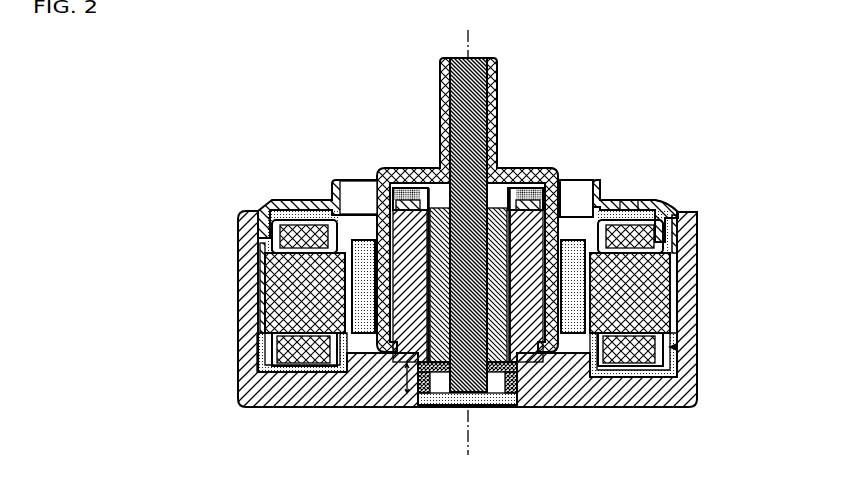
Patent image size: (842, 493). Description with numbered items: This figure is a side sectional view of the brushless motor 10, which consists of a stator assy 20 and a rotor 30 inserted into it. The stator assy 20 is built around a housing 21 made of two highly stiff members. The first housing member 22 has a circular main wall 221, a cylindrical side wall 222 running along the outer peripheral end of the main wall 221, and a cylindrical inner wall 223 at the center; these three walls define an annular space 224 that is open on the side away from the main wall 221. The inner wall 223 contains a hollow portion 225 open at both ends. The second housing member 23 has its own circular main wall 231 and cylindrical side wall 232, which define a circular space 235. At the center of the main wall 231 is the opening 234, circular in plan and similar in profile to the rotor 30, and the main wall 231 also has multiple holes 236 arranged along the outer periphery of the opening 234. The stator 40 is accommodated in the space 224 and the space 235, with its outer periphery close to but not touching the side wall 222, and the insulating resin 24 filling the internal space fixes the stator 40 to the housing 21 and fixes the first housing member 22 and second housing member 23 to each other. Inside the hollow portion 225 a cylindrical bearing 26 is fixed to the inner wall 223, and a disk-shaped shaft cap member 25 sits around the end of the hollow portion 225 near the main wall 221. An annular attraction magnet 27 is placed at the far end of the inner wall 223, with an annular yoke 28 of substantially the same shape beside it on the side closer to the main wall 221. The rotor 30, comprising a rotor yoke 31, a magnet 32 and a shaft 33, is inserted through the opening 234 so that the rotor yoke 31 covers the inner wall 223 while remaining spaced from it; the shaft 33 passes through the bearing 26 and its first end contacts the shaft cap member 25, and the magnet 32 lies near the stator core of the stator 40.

The brushless motor 10 is at (642, 47).
The stator assy 20 is at (700, 458).
The housing 21 is at (745, 222).
The first housing member 22 is at (688, 268).
The second housing member 23 is at (698, 236).
The insulating resin 24 is at (672, 364).
The shaft cap member 25 is at (517, 392).
The bearing 26 is at (525, 338).
The attraction magnet 27 is at (528, 190).
The yoke 28 is at (548, 185).
The rotor 30 is at (340, 108).
The rotor yoke 31 is at (400, 170).
The magnet 32 is at (369, 250).
The shaft 33 is at (453, 82).
The stator 40 is at (628, 358).
The main wall 221 is at (587, 404).
The side wall 222 is at (690, 360).
The inner wall 223 is at (560, 366).
The space 224 is at (676, 347).
The hollow portion 225 is at (430, 406).
The main wall 231 is at (615, 207).
The side wall 232 is at (677, 229).
The opening 234 is at (580, 192).
The space 235 is at (658, 203).
The holes 236 is at (641, 194).